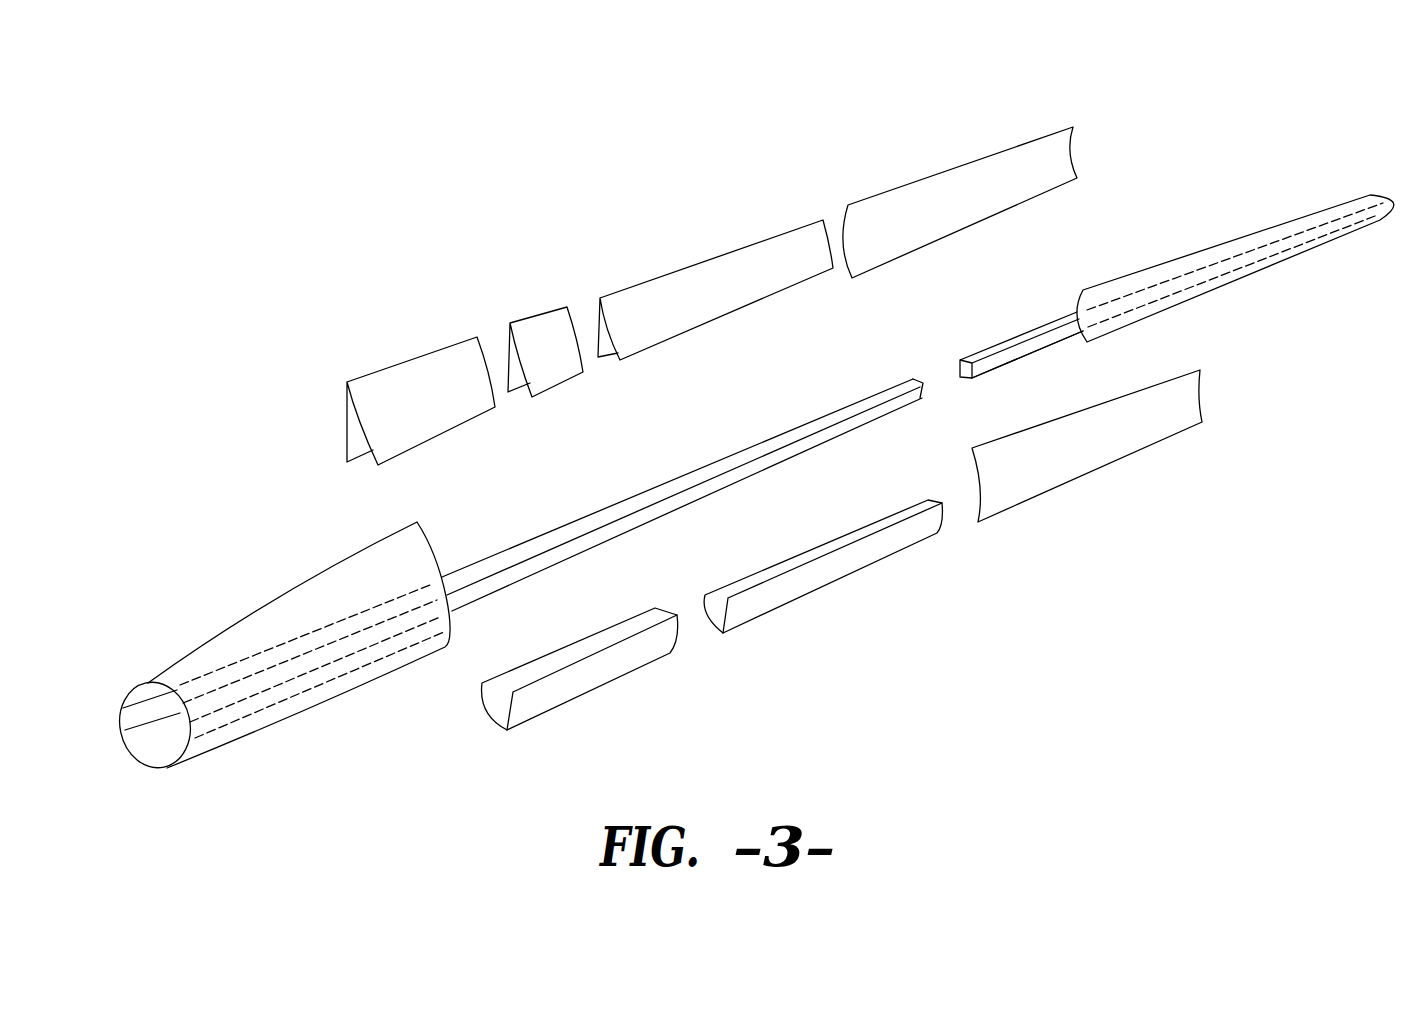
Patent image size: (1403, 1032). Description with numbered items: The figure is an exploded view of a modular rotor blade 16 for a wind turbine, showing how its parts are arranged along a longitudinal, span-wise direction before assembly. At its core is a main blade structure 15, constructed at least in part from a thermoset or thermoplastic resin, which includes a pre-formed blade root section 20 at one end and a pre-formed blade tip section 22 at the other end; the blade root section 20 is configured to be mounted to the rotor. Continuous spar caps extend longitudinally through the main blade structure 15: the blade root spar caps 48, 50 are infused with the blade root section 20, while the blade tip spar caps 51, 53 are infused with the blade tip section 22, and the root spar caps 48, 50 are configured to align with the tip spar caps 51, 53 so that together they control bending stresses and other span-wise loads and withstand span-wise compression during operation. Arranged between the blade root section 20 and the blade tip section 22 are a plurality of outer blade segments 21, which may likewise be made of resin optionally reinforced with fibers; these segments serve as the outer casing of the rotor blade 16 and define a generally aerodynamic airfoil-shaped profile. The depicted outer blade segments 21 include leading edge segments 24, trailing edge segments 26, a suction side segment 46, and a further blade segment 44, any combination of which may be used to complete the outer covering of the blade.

The main blade structure 15 is at (517, 572).
The rotor blade 16 is at (1138, 143).
The blade root section 20 is at (273, 727).
The outer blade segment 21 is at (538, 718).
The blade tip section 22 is at (1245, 277).
The leading edge segment 24 is at (590, 697).
The trailing edge segment 26 is at (420, 355).
The blade segment 44 is at (958, 165).
The suction side segment 46 is at (1093, 467).
The blade root spar cap 48 is at (495, 562).
The blade root spar cap 50 is at (672, 500).
The blade tip spar cap 51 is at (960, 358).
The blade tip spar cap 53 is at (1012, 362).